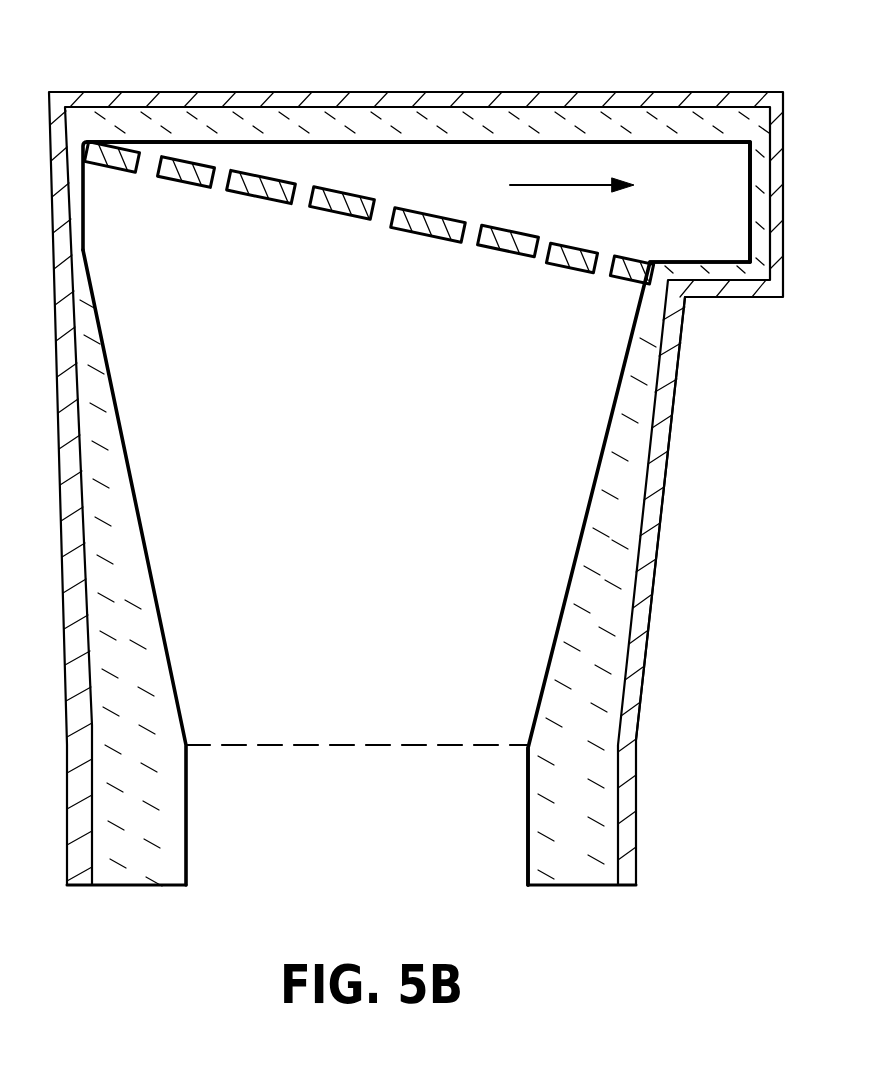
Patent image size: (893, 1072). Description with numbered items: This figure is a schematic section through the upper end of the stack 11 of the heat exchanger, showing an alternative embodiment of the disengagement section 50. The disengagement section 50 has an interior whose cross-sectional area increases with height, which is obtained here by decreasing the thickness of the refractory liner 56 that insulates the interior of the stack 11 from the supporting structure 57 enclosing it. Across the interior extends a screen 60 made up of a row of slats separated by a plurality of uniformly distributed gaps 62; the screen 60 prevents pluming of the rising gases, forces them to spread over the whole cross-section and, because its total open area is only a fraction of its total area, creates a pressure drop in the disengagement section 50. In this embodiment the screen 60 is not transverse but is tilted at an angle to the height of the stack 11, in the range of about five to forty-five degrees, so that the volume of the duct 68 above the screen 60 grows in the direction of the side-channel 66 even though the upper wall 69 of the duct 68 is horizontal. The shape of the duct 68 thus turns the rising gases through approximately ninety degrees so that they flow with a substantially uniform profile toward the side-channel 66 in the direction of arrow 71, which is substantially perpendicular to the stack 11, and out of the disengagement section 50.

The stack 11 is at (610, 523).
The disengagement section 50 is at (708, 412).
The refractory liner 56 is at (602, 656).
The supporting structure 57 is at (632, 720).
The screen 60 is at (432, 232).
The gaps 62 is at (148, 165).
The side-channel 66 is at (722, 158).
The duct 68 is at (452, 192).
The upper wall 69 is at (340, 140).
The arrow 71 is at (563, 185).